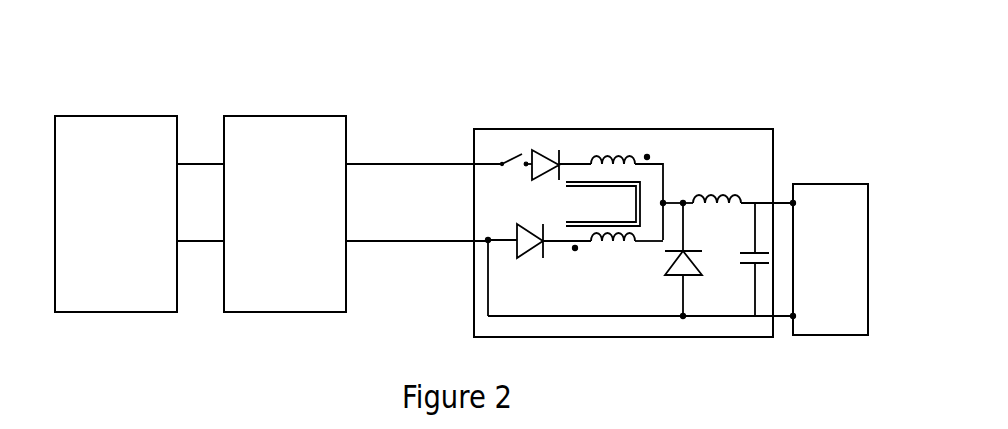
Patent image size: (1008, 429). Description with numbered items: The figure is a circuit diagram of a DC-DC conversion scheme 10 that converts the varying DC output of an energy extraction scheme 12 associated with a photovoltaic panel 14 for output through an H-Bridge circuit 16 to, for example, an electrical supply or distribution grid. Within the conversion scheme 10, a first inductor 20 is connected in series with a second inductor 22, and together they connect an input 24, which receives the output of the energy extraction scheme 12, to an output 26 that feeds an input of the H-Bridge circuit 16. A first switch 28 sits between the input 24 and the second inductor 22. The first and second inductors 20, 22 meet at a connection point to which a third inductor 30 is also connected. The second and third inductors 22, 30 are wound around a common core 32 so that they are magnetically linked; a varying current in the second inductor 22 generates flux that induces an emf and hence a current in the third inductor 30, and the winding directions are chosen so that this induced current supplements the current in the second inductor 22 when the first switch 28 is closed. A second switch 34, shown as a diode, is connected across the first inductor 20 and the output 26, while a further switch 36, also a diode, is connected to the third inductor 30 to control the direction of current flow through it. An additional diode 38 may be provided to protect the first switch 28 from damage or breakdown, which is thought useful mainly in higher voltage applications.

The DC-DC conversion scheme 10 is at (580, 129).
The energy extraction scheme 12 is at (302, 115).
The photovoltaic panel 14 is at (122, 115).
The H-Bridge circuit 16 is at (849, 183).
The first inductor 20 is at (726, 198).
The second inductor 22 is at (619, 157).
The input 24 is at (467, 169).
The output 26 is at (778, 197).
The first switch 28 is at (511, 158).
The third inductor 30 is at (603, 252).
The common core 32 is at (648, 188).
The second switch 34 is at (681, 277).
The further switch 36 is at (517, 253).
The additional diode 38 is at (545, 150).